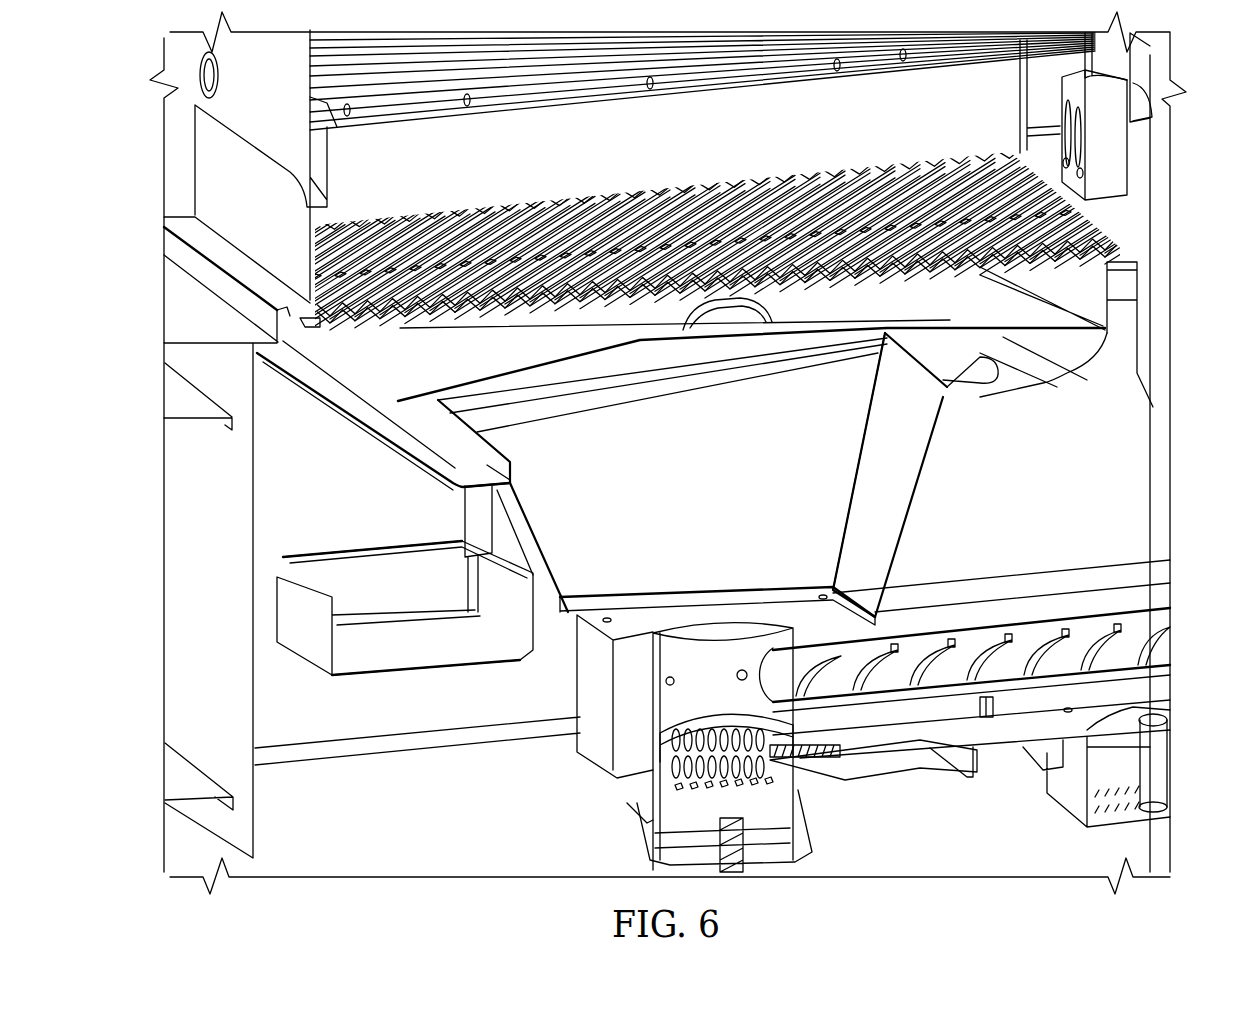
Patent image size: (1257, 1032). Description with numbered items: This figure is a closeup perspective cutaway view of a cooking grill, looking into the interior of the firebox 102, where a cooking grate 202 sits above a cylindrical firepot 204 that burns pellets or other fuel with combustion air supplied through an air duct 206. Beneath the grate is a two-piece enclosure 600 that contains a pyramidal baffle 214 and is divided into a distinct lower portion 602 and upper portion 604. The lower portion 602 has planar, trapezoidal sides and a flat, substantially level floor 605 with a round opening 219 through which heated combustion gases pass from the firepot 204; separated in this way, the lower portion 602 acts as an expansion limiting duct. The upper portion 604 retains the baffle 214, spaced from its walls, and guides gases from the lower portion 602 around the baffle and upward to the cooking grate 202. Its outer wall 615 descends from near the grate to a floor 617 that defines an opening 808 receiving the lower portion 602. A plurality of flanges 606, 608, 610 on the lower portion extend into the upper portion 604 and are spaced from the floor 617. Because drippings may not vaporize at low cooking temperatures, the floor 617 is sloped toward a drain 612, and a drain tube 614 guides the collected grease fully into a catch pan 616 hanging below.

The firebox 102 is at (213, 177).
The cooking grate 202 is at (700, 208).
The firepot 204 is at (783, 807).
The air duct 206 is at (983, 730).
The baffle 214 is at (830, 313).
The opening 219 is at (699, 632).
The enclosure 600 is at (916, 503).
The lower portion 602 is at (905, 535).
The upper portion 604 is at (313, 352).
The floor 605 is at (797, 603).
The flange 606 is at (975, 360).
The flange 608 is at (612, 373).
The flange 610 is at (433, 448).
The drain 612 is at (483, 488).
The drain tube 614 is at (467, 518).
The outer wall 615 is at (1137, 293).
The catch pan 616 is at (350, 582).
The floor 617 is at (1027, 390).
The opening 808 is at (963, 405).